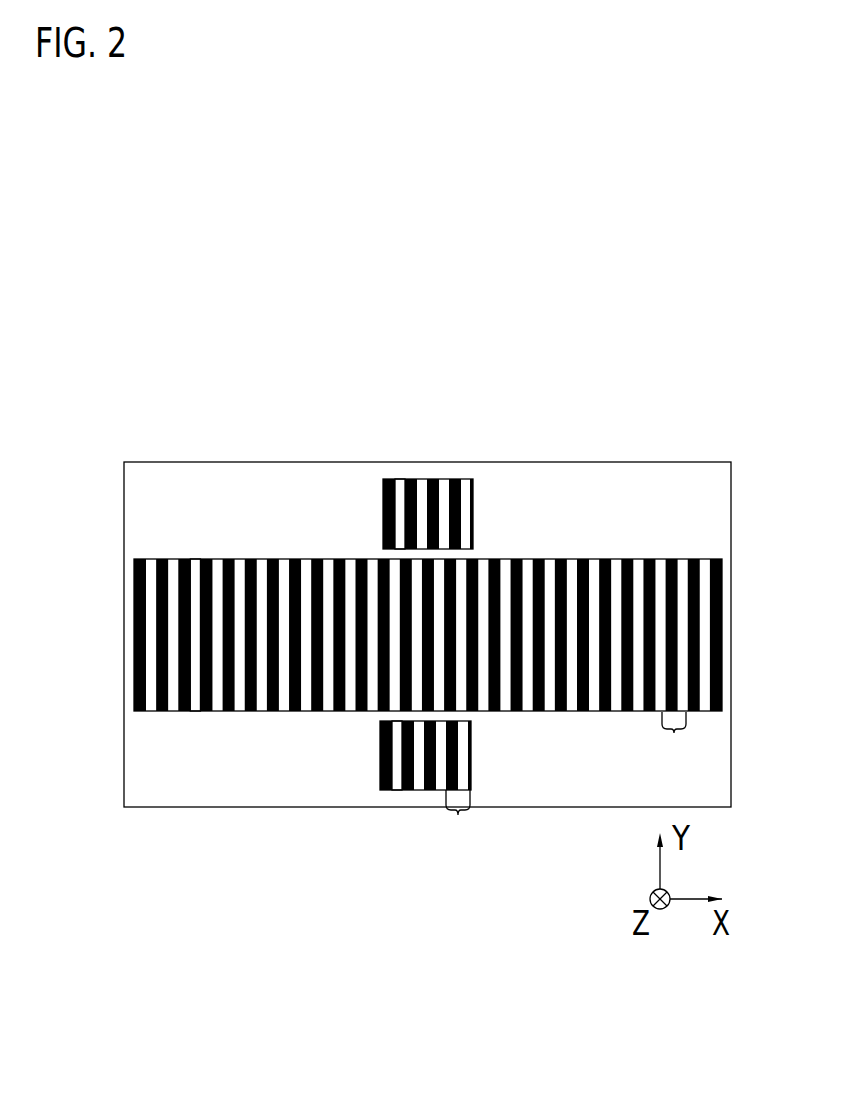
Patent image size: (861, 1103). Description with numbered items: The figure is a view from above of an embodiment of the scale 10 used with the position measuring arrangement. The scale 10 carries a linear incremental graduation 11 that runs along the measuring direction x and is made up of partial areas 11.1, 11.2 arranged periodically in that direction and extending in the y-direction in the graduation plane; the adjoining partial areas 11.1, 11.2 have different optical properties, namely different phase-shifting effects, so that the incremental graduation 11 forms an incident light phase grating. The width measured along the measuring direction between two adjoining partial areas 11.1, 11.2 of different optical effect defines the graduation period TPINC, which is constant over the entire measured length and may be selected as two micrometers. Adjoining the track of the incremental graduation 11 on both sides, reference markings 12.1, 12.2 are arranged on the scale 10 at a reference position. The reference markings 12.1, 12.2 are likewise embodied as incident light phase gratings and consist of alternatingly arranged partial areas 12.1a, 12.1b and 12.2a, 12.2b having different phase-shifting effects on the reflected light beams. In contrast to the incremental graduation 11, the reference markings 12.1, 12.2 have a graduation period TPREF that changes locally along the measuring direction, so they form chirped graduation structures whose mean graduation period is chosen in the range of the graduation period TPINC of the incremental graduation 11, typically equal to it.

The scale 10 is at (140, 820).
The incremental graduation 11 is at (469, 674).
The partial area 11.1 is at (158, 711).
The partial area 11.2 is at (192, 711).
The reference marking 12.1 is at (381, 833).
The partial area 12.1a is at (380, 753).
The partial area 12.1b is at (380, 792).
The reference marking 12.2 is at (371, 448).
The partial area 12.2a is at (383, 502).
The partial area 12.2b is at (403, 495).
The graduation period of the incremental graduation TPINC is at (690, 746).
The graduation period of the reference markings TPREF is at (474, 826).